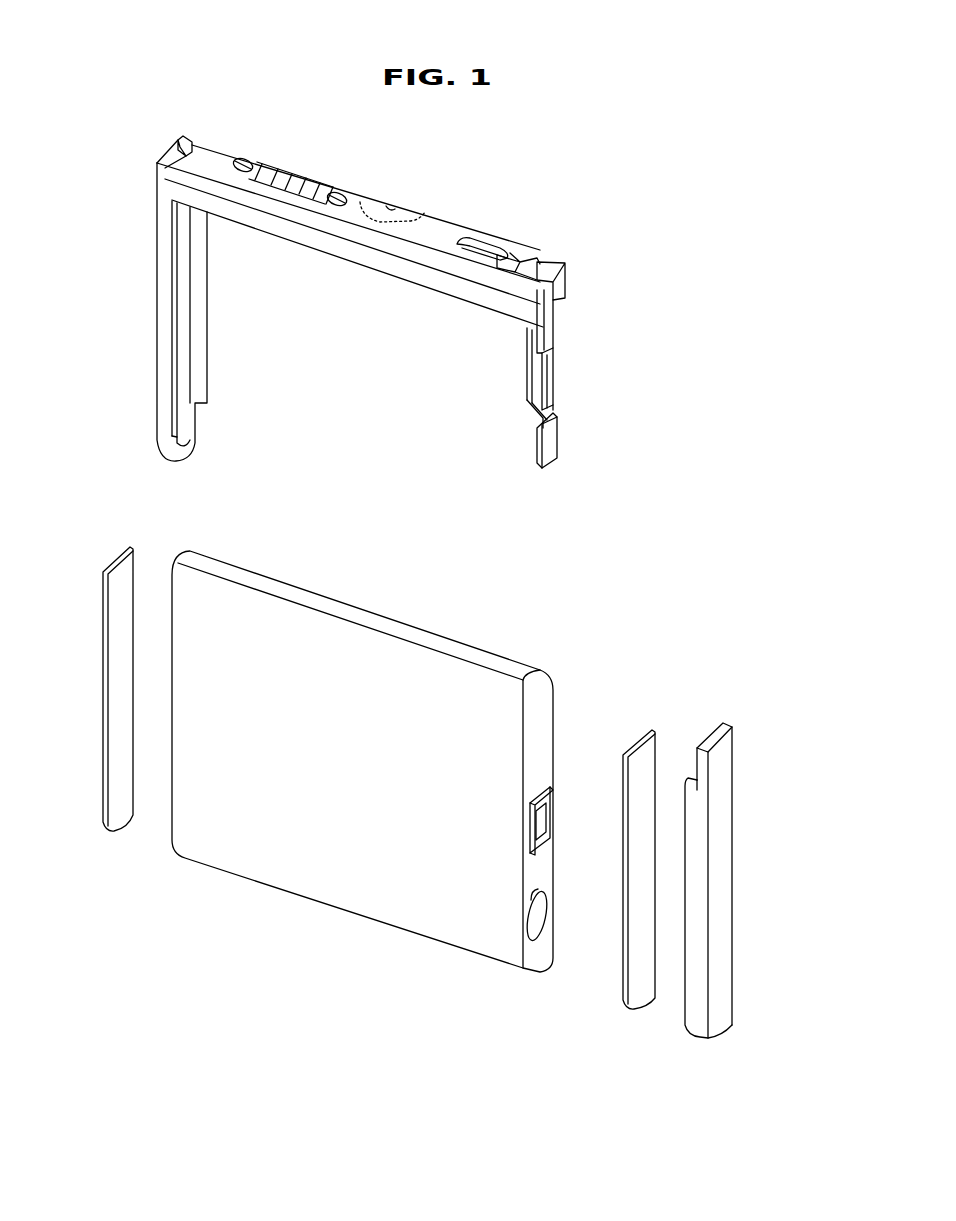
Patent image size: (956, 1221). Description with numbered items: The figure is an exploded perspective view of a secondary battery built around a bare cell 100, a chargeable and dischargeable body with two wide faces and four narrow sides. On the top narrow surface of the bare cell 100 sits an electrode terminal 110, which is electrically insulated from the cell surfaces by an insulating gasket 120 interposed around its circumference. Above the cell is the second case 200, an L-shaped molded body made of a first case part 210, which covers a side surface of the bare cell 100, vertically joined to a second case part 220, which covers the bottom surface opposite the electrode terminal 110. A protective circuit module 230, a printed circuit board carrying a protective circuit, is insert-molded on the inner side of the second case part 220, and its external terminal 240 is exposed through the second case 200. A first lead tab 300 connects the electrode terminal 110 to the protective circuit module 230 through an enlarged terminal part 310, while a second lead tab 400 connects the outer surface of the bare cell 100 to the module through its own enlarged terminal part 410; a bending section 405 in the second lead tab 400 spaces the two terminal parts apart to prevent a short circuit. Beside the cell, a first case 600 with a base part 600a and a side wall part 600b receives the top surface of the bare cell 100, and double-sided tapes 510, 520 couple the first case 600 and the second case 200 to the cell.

The bare cell 100 is at (330, 887).
The electrode terminal 110 is at (547, 822).
The insulating gasket 120 is at (550, 792).
The second case 200 is at (460, 217).
The first case part 210 is at (366, 263).
The second case part 220 is at (162, 285).
The protective circuit module (PCM) 230 is at (396, 204).
The external terminal 240 is at (275, 172).
The first lead tab 300 is at (547, 325).
The terminal part 310 is at (547, 370).
The second lead tab 400 is at (525, 362).
The bending section 405 is at (532, 413).
The terminal part 410 is at (548, 442).
The double-sided tape 510 is at (103, 673).
The double-sided tape 520 is at (642, 1005).
The first case 600 is at (812, 745).
The base part 600a is at (722, 755).
The side wall part 600b is at (690, 787).